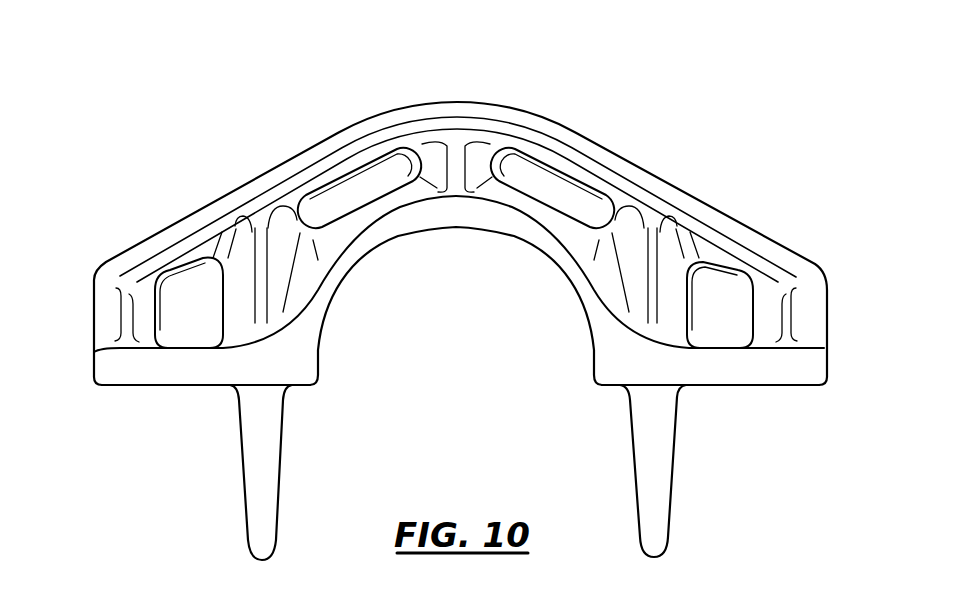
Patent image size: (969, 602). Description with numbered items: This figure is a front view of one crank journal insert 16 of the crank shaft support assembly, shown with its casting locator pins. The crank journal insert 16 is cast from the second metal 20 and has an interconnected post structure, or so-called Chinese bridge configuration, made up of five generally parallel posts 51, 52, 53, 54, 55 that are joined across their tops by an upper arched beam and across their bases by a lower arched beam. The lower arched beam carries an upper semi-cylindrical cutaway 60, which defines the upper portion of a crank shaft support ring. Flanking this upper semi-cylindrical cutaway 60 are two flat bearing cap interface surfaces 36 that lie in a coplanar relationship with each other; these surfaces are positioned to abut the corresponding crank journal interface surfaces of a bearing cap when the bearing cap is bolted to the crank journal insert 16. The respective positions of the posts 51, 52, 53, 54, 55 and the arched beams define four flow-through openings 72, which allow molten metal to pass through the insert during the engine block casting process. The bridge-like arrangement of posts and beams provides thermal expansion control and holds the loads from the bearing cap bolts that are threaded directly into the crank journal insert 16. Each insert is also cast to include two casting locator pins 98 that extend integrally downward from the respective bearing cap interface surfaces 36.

The crank journal insert 16 is at (572, 124).
The second metal 20 is at (623, 180).
The bearing cap interface surfaces 36 is at (142, 386).
The post 51 is at (115, 322).
The post 52 is at (262, 243).
The post 53 is at (459, 163).
The post 54 is at (656, 248).
The post 55 is at (788, 316).
The upper semi-cylindrical cutaway 60 is at (483, 226).
The flow-through openings 72 is at (309, 230).
The casting locator pins 98 is at (260, 487).